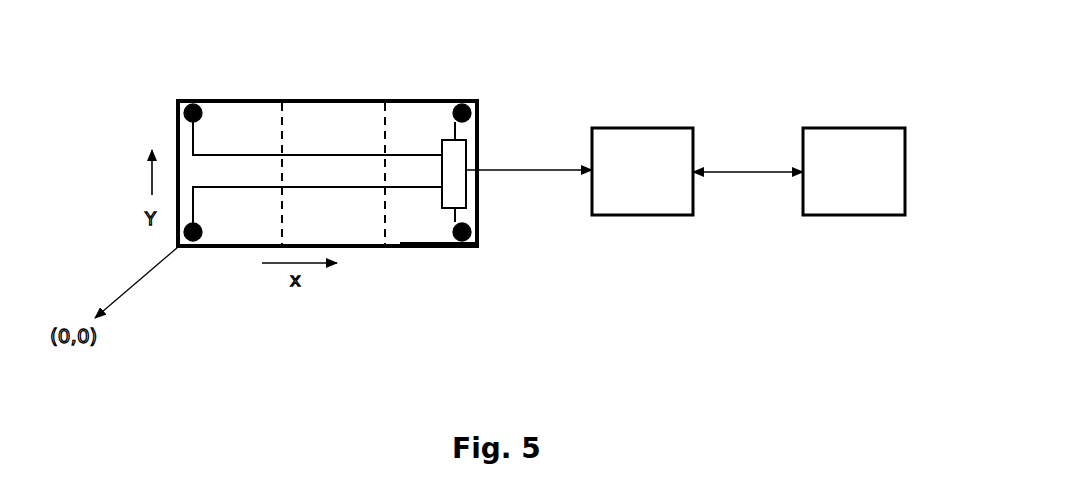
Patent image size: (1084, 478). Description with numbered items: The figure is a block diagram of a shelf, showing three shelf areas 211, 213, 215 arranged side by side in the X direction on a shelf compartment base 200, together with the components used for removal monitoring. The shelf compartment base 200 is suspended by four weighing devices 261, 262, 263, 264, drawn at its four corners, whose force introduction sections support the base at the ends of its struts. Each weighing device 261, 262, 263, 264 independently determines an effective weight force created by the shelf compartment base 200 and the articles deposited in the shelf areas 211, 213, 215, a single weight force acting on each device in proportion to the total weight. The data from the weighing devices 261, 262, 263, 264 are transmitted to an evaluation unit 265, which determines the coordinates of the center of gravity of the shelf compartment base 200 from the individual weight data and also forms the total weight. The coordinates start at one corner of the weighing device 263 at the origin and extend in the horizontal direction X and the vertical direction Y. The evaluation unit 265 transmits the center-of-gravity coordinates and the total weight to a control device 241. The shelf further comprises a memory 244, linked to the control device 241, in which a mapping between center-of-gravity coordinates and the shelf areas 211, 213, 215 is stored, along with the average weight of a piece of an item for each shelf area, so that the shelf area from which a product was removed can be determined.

The shelf compartment base 200 is at (337, 98).
The shelf area 211 is at (235, 252).
The shelf area 213 is at (362, 250).
The shelf area 215 is at (418, 250).
The control device 241 is at (645, 128).
The memory 244 is at (855, 128).
The weighing device 261 is at (467, 100).
The weighing device 262 is at (463, 248).
The weighing device 263 is at (190, 247).
The weighing device 264 is at (197, 103).
The evaluation unit 265 is at (467, 153).